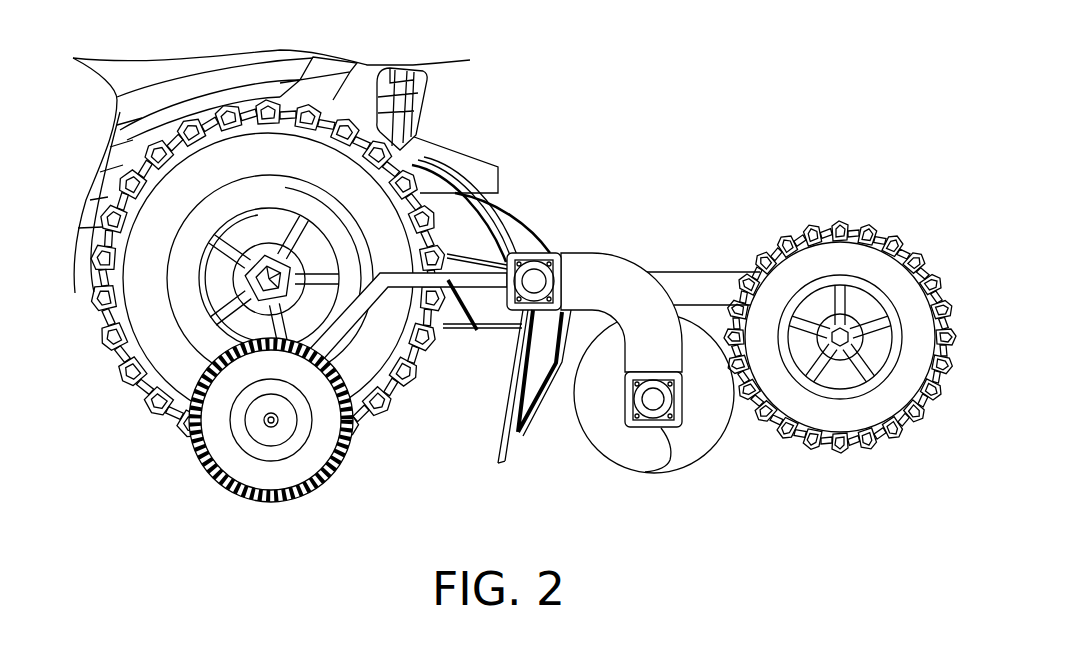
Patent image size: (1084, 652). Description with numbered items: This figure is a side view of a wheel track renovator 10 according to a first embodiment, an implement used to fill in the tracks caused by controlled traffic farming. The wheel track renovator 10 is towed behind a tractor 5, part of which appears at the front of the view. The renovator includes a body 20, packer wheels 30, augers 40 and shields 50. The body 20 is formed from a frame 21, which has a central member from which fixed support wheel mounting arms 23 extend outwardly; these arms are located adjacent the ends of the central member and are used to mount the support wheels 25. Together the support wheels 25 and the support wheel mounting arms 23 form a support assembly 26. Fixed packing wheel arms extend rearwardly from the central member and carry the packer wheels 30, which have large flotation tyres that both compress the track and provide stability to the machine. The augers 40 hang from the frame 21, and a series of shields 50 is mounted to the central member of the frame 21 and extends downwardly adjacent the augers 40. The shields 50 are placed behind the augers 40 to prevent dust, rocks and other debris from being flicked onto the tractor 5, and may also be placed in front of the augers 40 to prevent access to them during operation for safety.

The tractor 5 is at (368, 67).
The wheel track renovator 10 is at (698, 66).
The body 20 is at (594, 316).
The frame 21 is at (618, 268).
The support wheel mounting arm 23 is at (459, 330).
The support wheel 25 is at (273, 477).
The support assembly 26 is at (402, 460).
The packer wheel 30 is at (907, 283).
The auger 40 is at (690, 457).
The shield 50 is at (514, 437).